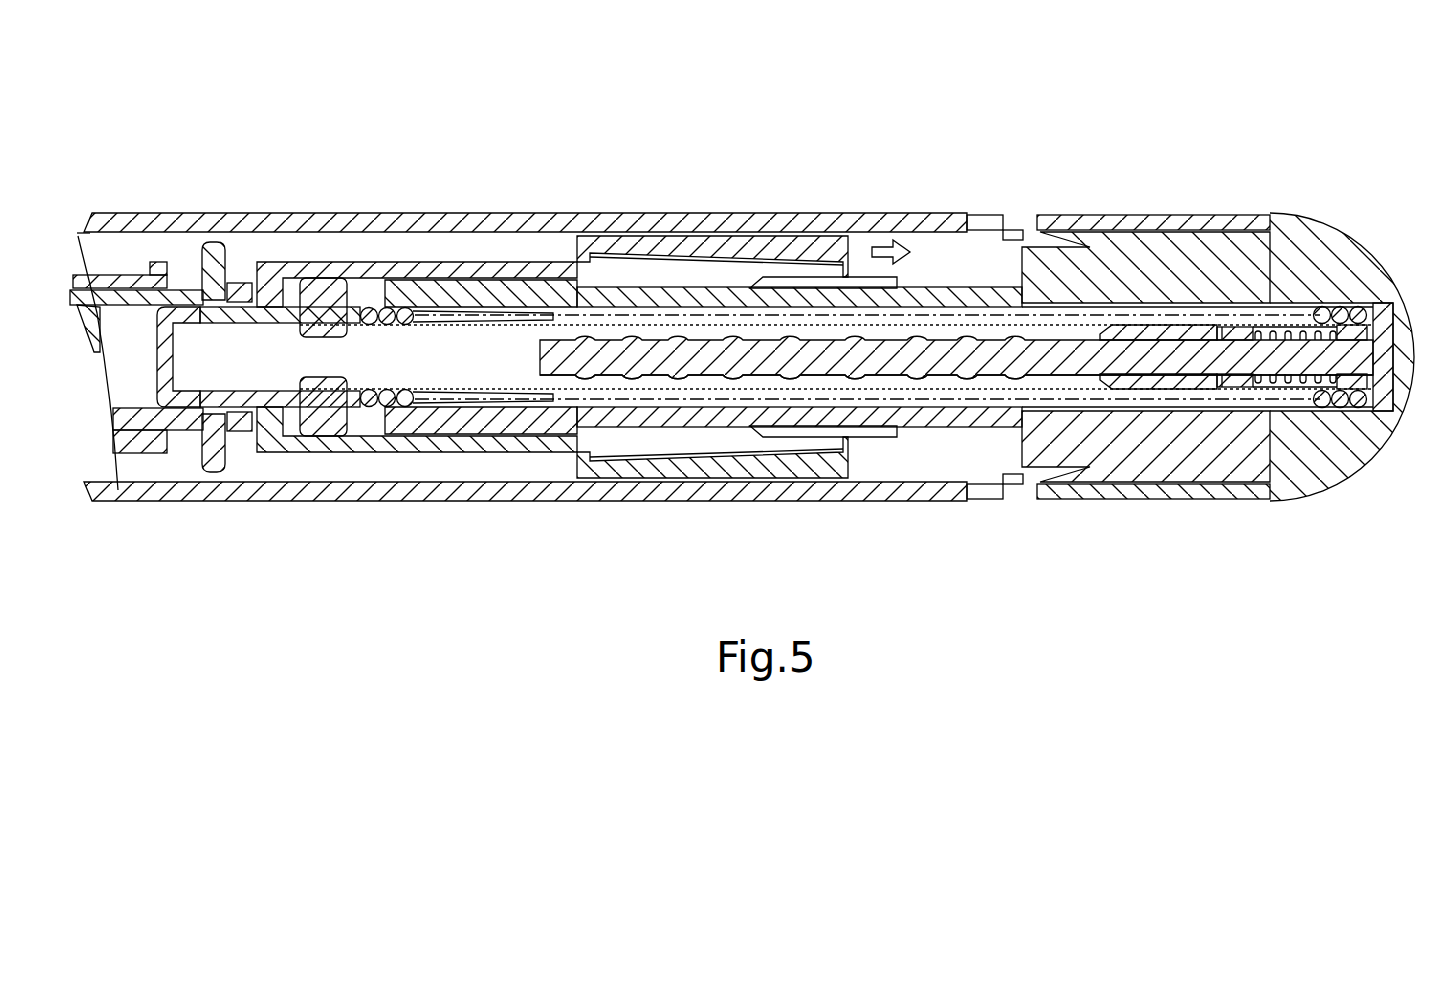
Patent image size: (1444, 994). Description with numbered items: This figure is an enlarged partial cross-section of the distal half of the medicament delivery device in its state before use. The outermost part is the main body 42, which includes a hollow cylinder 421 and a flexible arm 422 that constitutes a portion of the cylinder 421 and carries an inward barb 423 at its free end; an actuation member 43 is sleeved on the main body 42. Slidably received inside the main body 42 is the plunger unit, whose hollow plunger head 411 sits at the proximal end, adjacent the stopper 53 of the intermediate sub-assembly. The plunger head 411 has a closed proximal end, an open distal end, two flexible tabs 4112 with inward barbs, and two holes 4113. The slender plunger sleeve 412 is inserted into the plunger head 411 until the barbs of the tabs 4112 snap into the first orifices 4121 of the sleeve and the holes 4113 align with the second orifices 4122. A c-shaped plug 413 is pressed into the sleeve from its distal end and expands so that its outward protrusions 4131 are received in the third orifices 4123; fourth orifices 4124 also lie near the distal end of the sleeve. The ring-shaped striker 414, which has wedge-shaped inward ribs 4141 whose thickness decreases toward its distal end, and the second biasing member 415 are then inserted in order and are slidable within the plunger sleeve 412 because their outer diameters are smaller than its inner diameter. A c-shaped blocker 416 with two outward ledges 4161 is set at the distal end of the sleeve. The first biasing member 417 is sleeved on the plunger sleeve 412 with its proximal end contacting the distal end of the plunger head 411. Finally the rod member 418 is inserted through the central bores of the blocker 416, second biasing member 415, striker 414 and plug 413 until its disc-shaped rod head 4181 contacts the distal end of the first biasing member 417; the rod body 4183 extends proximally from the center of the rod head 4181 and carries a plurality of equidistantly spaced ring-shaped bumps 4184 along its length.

The main body 42 is at (553, 213).
The hollow cylinder 421 is at (950, 300).
The flexible arm 422 is at (457, 292).
The inward barb 423 is at (347, 285).
The actuation member 43 is at (665, 236).
The c-shaped plug 413 is at (1137, 332).
The outward protrusions 4131 is at (1193, 330).
The second biasing member 415 is at (1247, 490).
The c-shaped blocker 416 is at (1408, 300).
The outward ledges 4161 is at (1355, 322).
The rod head 4181 is at (1383, 407).
The rod member 418 is at (817, 353).
The rod body 4183 is at (890, 375).
The ring-shaped bumps 4184 is at (1013, 375).
The third orifices 4123 is at (1180, 388).
The fourth orifices 4124 is at (1290, 387).
The ring-shaped striker 414 is at (1290, 328).
The wedge-shaped inward rib 4141 is at (1222, 342).
The plunger sleeve 412 is at (655, 402).
The first orifices 4121 is at (217, 420).
The second orifices 4122 is at (320, 395).
The flexible tabs 4112 is at (230, 290).
The holes 4113 is at (303, 280).
The hollow plunger head 411 is at (133, 300).
The stopper 53 is at (106, 300).
The first biasing member 417 is at (415, 407).